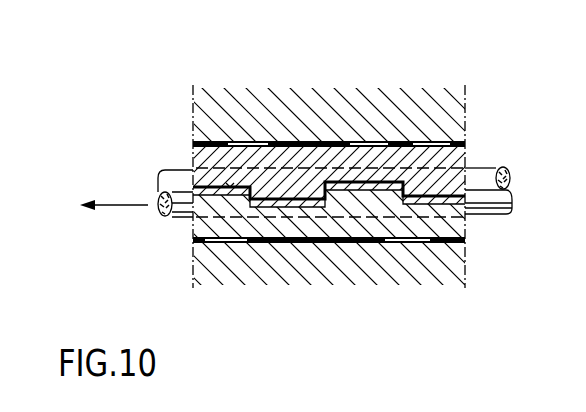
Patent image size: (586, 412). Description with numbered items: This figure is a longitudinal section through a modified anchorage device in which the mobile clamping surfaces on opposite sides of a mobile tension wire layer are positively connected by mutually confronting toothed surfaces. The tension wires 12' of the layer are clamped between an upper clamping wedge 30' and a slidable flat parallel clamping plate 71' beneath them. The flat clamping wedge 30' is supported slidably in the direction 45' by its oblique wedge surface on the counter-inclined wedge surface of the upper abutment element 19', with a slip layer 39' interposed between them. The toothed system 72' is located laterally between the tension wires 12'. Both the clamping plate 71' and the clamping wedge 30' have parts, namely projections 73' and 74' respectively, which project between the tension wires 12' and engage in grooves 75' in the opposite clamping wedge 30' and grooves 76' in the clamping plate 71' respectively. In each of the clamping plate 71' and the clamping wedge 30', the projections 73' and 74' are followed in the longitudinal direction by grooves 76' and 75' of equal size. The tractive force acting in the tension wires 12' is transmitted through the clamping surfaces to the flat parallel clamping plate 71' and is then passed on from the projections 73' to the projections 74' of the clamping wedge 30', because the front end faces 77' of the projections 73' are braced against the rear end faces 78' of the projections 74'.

The tension wires 12' is at (164, 215).
The upper abutment element 19' is at (329, 173).
The clamping wedge 30' is at (293, 189).
The slip layer 39' is at (487, 147).
The direction 45' is at (114, 191).
The clamping plate 71' is at (293, 190).
The toothed system 72' is at (477, 173).
The projections of the clamping plate 73' is at (305, 133).
The projections of the clamping wedge 74' is at (329, 87).
The grooves in the clamping wedge 75' is at (330, 114).
The grooves in the clamping plate 76' is at (293, 190).
The front end faces 77' is at (329, 120).
The rear end faces 78' is at (293, 173).